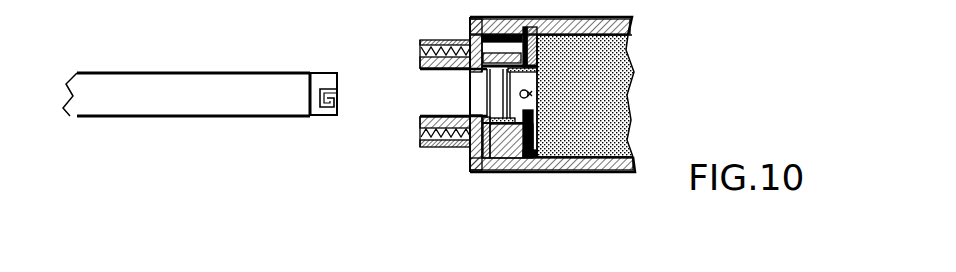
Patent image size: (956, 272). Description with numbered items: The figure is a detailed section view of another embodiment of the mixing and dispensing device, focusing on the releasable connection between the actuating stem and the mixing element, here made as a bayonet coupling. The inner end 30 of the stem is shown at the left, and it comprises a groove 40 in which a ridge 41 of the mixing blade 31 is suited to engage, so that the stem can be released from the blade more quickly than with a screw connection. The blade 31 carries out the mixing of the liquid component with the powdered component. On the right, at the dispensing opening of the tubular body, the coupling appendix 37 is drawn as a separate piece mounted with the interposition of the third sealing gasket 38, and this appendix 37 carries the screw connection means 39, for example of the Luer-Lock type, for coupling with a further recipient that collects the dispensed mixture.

The inner end 30 is at (262, 83).
The groove 40 is at (337, 92).
The coupling appendix 37 is at (437, 158).
The mixing blade 31 is at (547, 175).
The screw connection means 39 is at (410, 122).
The third sealing gasket 38 is at (499, 123).
The ridge 41 is at (562, 76).